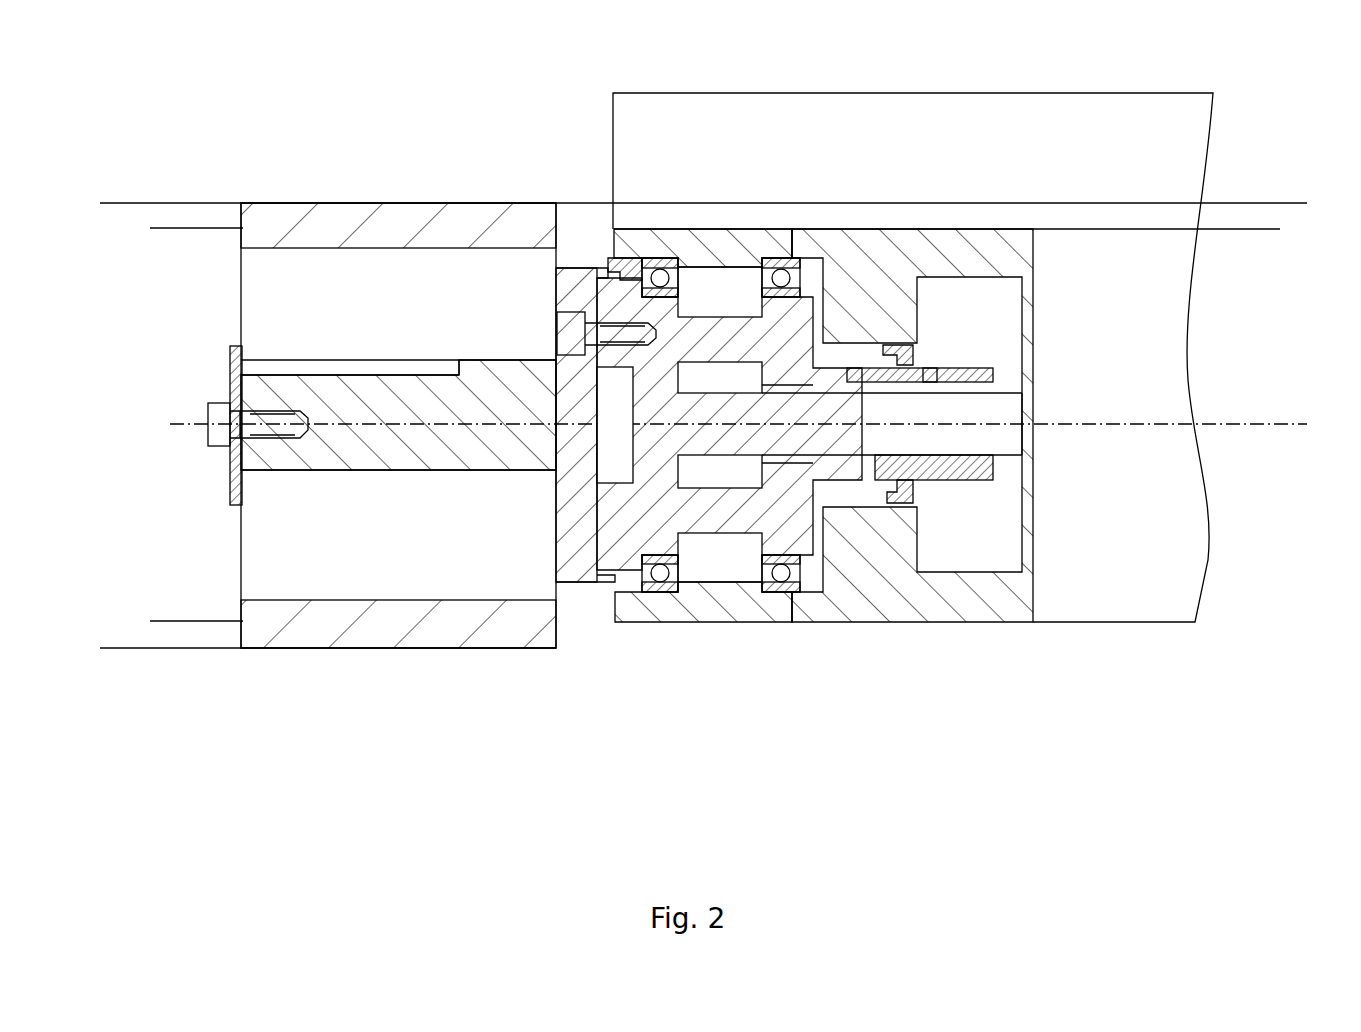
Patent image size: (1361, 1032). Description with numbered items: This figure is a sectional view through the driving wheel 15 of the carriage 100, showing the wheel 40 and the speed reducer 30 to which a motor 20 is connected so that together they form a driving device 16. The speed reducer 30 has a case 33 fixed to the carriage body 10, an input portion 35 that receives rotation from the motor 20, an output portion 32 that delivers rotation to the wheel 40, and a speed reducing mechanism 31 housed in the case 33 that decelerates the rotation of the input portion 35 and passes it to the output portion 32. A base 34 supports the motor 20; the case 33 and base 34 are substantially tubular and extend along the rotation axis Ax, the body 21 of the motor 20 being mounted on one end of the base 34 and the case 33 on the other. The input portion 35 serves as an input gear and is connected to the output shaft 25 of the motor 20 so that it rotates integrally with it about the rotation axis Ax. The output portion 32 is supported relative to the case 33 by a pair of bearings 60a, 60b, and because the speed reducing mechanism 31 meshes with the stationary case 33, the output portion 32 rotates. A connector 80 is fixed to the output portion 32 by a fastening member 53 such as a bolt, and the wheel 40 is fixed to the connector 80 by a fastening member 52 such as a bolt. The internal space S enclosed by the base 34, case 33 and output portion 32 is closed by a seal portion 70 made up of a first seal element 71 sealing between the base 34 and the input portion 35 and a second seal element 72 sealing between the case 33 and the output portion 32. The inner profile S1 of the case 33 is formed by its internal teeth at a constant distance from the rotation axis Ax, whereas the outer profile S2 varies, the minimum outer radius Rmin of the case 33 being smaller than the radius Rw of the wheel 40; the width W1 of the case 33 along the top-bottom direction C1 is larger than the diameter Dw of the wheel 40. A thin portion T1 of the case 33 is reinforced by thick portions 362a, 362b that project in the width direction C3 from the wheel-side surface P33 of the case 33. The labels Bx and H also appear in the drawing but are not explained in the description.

The carriage 100 is at (312, 117).
The carriage body 10 is at (685, 92).
The driving wheel 15 is at (526, 133).
The driving device 16 is at (808, 744).
The motor 20 is at (1156, 194).
The body 21 is at (1103, 240).
The output shaft 25 is at (1008, 412).
The speed reducer 30 is at (616, 658).
The speed reducing mechanism 31 is at (752, 312).
The output portion 32 is at (570, 555).
The case 33 is at (726, 235).
The base 34 is at (980, 243).
The input portion 35 is at (972, 474).
The wheel 40 is at (438, 203).
The fastening member 52 is at (218, 408).
The fastening member 53 is at (571, 338).
The bearing 60a is at (660, 258).
The bearing 60b is at (773, 622).
The seal portion 70 is at (594, 248).
The first seal element 71 is at (913, 358).
The second seal element 72 is at (613, 258).
The connector 80 is at (575, 642).
The thick portion 362a is at (612, 600).
The thick portion 362b is at (602, 230).
The surface P33 is at (622, 235).
The internal space S is at (837, 360).
The inner profile S1 is at (722, 612).
The outer profile S2 is at (702, 622).
The thin portion T1 is at (765, 235).
The hole H is at (931, 372).
The diameter Dw is at (111, 203).
The width W1 is at (166, 621).
The bolt axis Bx is at (197, 433).
The minimum outer radius Rmin is at (1262, 229).
The radius Rw is at (1292, 203).
The rotation axis Ax is at (1157, 425).
The top-bottom direction C1 is at (1093, 700).
The width direction C3 is at (1077, 813).